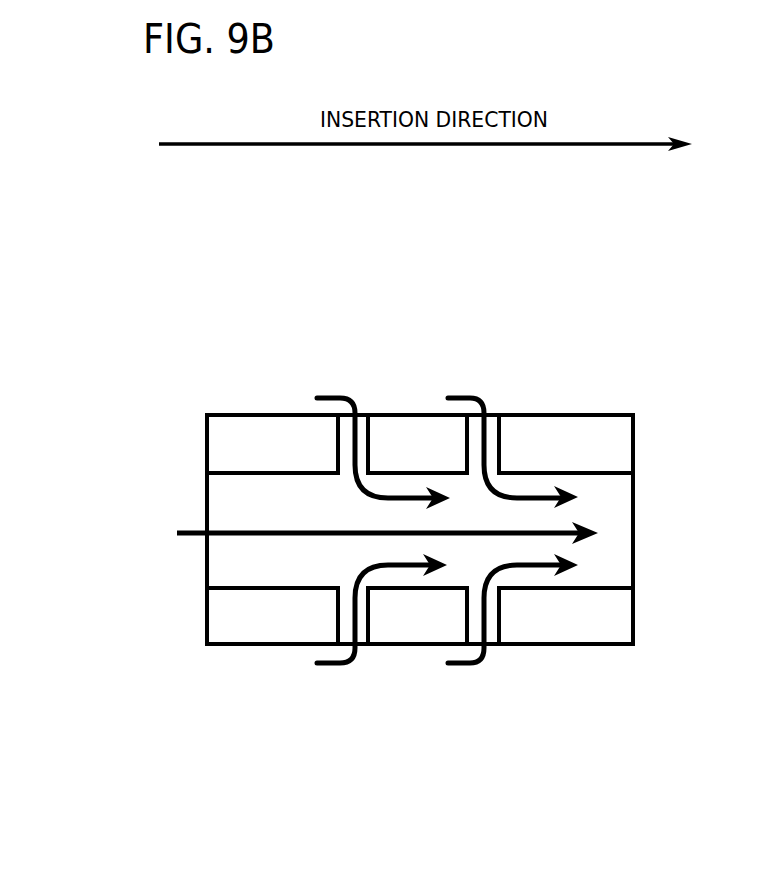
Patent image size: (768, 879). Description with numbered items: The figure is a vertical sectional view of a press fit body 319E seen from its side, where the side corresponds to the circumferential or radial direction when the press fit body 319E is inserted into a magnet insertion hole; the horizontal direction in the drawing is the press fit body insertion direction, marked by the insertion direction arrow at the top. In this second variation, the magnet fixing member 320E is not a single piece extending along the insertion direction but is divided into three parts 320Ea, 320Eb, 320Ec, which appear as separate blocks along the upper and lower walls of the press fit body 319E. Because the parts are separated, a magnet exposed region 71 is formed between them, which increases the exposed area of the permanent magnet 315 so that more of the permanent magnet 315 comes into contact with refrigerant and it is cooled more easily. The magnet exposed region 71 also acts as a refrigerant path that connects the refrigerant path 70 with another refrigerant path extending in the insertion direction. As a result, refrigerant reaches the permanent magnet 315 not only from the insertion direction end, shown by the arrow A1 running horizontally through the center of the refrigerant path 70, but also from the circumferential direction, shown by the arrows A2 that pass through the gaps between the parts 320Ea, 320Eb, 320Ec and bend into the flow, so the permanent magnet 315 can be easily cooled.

The press fit body 319E is at (212, 687).
The magnet fixing member 320E is at (635, 332).
The first divided part of the magnet fixing member 320Ea is at (548, 433).
The second divided part of the magnet fixing member 320Eb is at (405, 433).
The third divided part of the magnet fixing member 320Ec is at (263, 433).
The refrigerant path 70 is at (263, 563).
The magnet exposed region 71 is at (347, 430).
The permanent magnet 315 is at (612, 515).
The arrow indicating refrigerant flow from the insertion direction end A1 is at (368, 533).
The arrows indicating refrigerant flow from the circumferential direction A2 is at (447, 529).